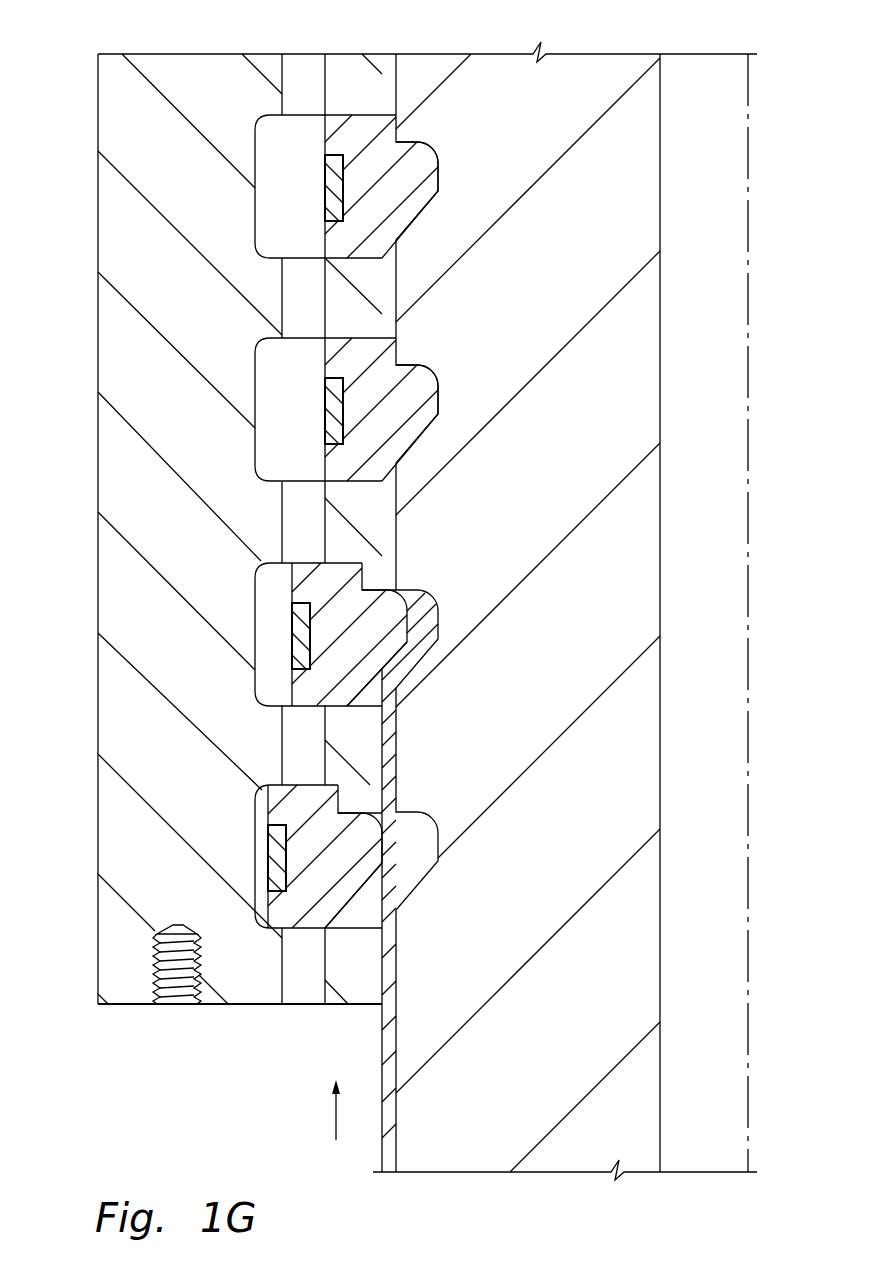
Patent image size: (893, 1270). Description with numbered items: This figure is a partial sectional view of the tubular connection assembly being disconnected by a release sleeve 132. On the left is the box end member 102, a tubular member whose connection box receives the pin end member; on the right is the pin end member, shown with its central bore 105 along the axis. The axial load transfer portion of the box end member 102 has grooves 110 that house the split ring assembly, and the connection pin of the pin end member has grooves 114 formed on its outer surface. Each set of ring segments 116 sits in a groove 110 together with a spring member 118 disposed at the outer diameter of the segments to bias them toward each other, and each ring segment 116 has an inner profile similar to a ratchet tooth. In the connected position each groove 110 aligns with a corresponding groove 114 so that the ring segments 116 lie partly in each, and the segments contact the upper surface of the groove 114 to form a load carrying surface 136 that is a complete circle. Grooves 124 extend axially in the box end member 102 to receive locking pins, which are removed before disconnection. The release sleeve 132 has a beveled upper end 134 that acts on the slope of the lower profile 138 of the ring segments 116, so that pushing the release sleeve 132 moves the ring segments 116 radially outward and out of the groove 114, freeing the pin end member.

The box end member 102 is at (125, 494).
The central bore 105 is at (665, 502).
The groove 110 is at (268, 205).
The groove 114 is at (438, 623).
The ring segment 116 is at (423, 155).
The spring member 118 is at (333, 178).
The groove 124 is at (302, 60).
The release sleeve 132 is at (387, 1042).
The beveled upper end 134 is at (392, 652).
The load carrying surface 136 is at (392, 566).
The lower profile 138 is at (355, 690).